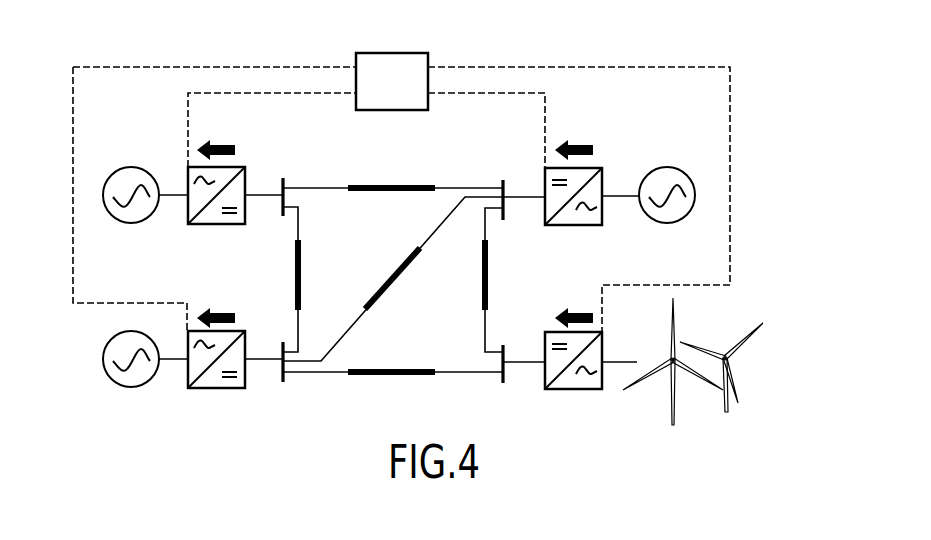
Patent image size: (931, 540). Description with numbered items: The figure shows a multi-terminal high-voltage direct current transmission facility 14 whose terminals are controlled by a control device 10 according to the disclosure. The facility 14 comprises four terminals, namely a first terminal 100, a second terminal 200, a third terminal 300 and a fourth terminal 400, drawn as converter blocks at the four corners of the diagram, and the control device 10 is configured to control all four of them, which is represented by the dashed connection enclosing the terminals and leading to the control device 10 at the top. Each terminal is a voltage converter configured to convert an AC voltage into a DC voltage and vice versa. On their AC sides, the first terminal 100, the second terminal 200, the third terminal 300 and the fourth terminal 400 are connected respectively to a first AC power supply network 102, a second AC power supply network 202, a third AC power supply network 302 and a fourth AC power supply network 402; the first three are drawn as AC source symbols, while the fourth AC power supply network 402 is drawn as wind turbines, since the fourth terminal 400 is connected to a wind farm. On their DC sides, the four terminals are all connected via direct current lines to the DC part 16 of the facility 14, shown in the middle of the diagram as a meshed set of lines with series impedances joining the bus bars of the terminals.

The control device 10 is at (404, 93).
The multi-terminal high-voltage direct current transmission facility 14 is at (524, 60).
The DC part 16 is at (448, 184).
The first terminal 100 is at (213, 224).
The first AC power supply network 102 is at (131, 223).
The second terminal 200 is at (213, 388).
The second AC power supply network 202 is at (131, 387).
The third terminal 300 is at (572, 225).
The third AC power supply network 302 is at (667, 223).
The fourth terminal 400 is at (572, 389).
The fourth AC power supply network 402 is at (622, 361).